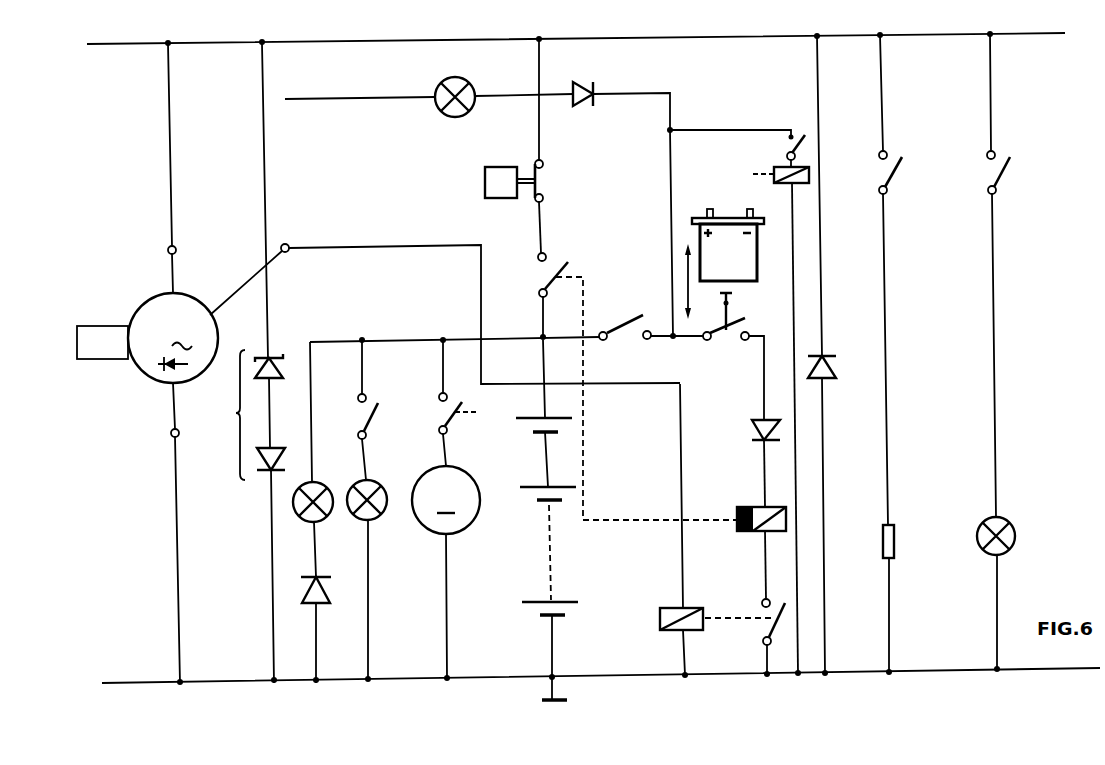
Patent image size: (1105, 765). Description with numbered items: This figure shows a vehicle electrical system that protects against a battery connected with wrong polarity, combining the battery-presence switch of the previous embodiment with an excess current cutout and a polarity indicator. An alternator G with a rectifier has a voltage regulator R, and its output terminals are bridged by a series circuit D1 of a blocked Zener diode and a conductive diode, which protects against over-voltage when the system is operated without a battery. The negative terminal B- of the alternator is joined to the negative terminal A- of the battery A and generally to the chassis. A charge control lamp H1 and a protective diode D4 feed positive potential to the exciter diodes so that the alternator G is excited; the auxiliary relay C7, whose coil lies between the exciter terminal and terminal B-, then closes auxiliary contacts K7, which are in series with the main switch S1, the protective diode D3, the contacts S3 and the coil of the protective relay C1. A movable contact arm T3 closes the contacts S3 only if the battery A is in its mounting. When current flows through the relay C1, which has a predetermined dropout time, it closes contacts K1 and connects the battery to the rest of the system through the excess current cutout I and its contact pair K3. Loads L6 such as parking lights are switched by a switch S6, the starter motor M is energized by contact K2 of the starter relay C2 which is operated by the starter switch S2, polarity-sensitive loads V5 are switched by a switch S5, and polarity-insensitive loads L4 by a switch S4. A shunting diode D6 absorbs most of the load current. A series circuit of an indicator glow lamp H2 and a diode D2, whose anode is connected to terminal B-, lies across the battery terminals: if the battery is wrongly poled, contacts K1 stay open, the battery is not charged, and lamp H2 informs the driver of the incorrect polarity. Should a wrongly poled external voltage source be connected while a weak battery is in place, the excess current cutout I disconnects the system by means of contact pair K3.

The alternator G is at (173, 338).
The voltage regulator R is at (102, 342).
The negative terminal B- is at (187, 533).
The series circuit D1 is at (250, 363).
The indicator element H2 is at (318, 486).
The diode D2 is at (332, 630).
The switch S6 is at (370, 398).
The loads L6 is at (371, 513).
The contact K2 is at (452, 418).
The starter motor M is at (446, 556).
The charge control lamp H1 is at (429, 108).
The protective diode D4 is at (682, 210).
The excess current cutout I is at (510, 182).
The contact pair K3 is at (547, 176).
The contacts K1 is at (637, 376).
The main switch S1 is at (622, 330).
The contacts S3 is at (724, 338).
The movable contact arm T3 is at (735, 298).
The battery negative terminal A- is at (548, 676).
The battery A is at (724, 215).
The starter switch S2 is at (787, 148).
The starter relay C2 is at (781, 420).
The shunting diode D6 is at (826, 380).
The protective diode D3 is at (750, 427).
The protective relay C1 is at (748, 505).
The auxiliary contacts K7 is at (762, 633).
The auxiliary relay C7 is at (660, 621).
The switch S5 is at (906, 280).
The loads V5 is at (903, 598).
The switch S4 is at (1013, 275).
The loads L4 is at (1009, 593).